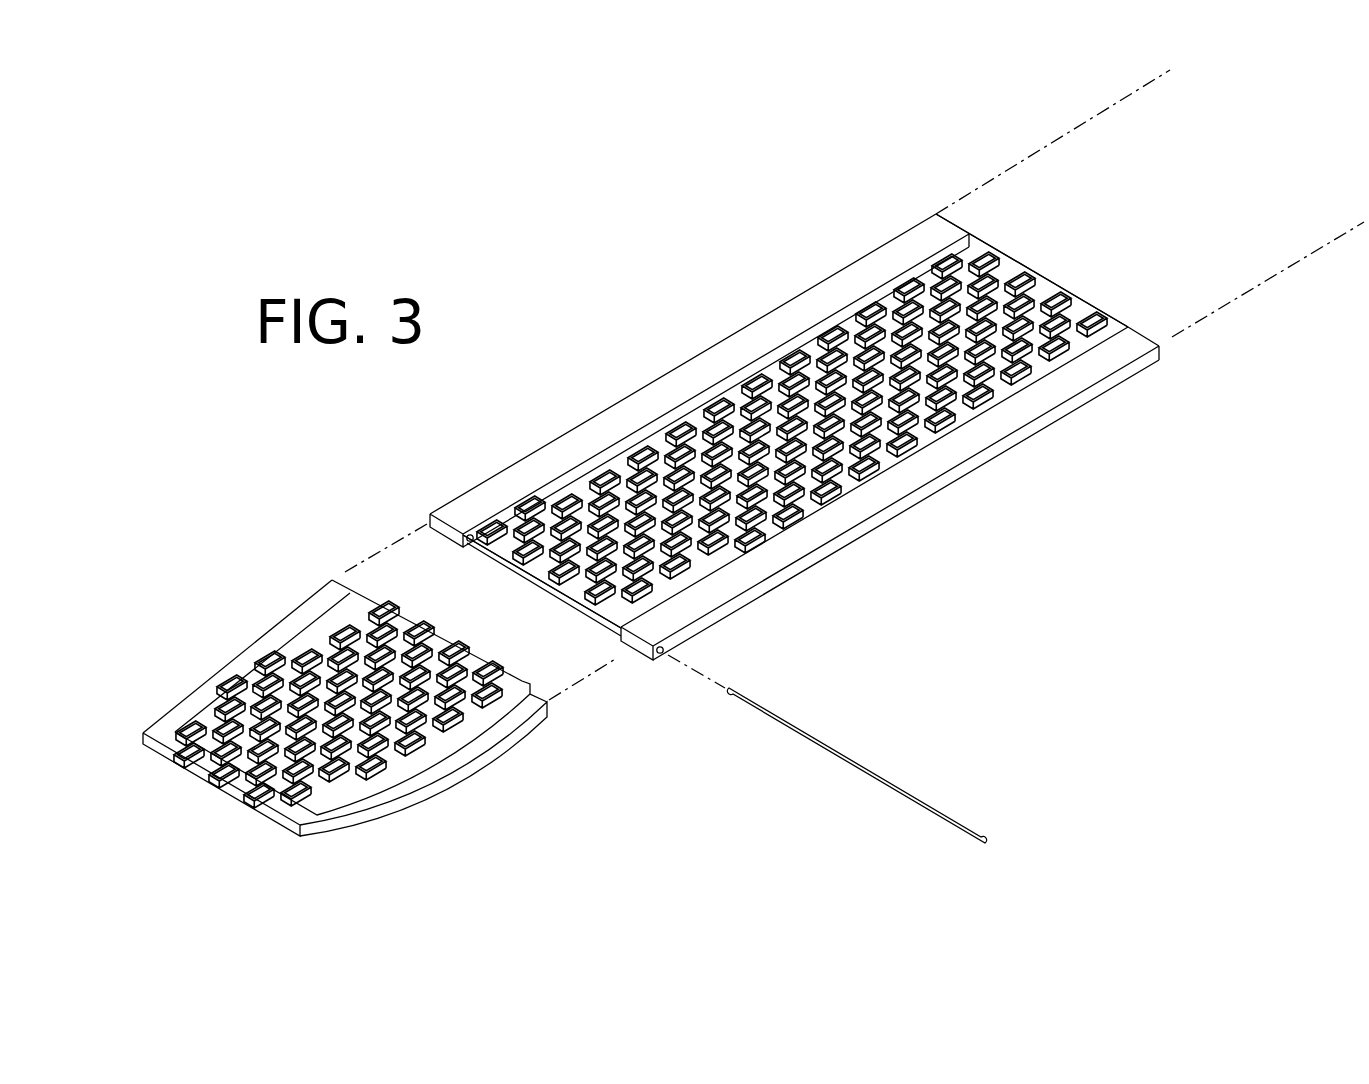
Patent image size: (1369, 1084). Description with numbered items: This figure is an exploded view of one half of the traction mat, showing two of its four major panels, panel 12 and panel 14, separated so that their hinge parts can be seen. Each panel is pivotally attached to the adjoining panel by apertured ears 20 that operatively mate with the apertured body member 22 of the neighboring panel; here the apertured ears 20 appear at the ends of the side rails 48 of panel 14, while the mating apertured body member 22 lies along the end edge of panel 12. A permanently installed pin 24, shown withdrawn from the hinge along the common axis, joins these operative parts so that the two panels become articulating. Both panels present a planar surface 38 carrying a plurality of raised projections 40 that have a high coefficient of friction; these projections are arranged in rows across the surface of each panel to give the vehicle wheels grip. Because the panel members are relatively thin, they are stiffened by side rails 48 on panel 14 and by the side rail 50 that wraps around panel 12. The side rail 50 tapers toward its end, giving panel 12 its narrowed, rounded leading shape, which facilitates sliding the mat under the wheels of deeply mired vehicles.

The panel 12 is at (458, 747).
The panel 14 is at (775, 562).
The apertured ears 20 is at (437, 528).
The apertured body member 22 is at (1087, 297).
The pin 24 is at (872, 770).
The planar surface 38 is at (525, 571).
The raised projections 40 is at (272, 668).
The side rail 48 is at (848, 282).
The side rail 50 is at (206, 666).